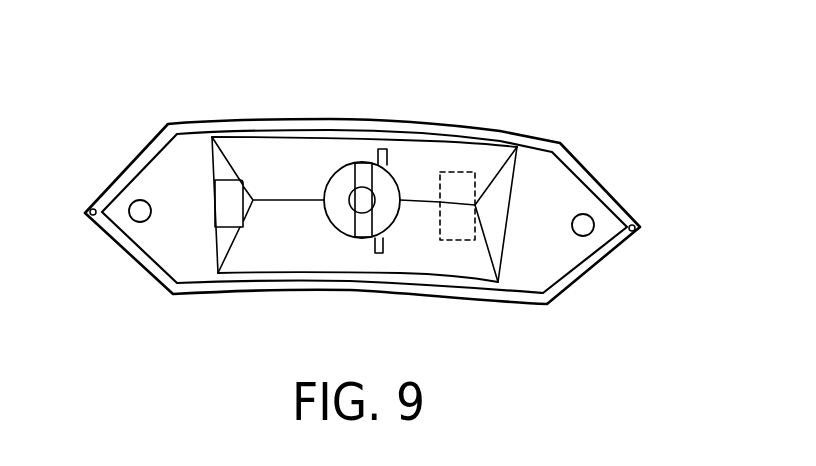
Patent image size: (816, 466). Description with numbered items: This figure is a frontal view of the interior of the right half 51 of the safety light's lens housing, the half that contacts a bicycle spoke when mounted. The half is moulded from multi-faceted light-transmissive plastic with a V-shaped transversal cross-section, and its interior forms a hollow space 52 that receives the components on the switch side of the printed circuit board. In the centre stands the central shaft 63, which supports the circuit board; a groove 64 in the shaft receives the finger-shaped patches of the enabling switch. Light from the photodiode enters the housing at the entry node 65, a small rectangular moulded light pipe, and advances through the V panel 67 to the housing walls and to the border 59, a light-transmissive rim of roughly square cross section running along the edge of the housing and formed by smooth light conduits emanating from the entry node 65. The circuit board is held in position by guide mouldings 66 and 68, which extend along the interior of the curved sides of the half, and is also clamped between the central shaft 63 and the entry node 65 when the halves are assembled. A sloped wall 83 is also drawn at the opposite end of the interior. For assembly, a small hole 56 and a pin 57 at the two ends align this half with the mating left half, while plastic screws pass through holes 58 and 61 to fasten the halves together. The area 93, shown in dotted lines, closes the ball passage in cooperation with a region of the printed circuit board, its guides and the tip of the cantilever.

The right half 51 is at (527, 106).
The hollow space 52 is at (137, 214).
The small hole 56 is at (93, 209).
The pin 57 is at (633, 232).
The hole 58 is at (588, 225).
The border 59 is at (290, 120).
The hole 61 is at (352, 206).
The central shaft 63 is at (336, 175).
The groove 64 is at (366, 163).
The entry node 65 is at (225, 198).
The guide moulding 66 is at (457, 135).
The V panel 67 is at (228, 163).
The guide moulding 68 is at (266, 275).
The sloped end wall 83 is at (487, 247).
The area 93 is at (440, 224).